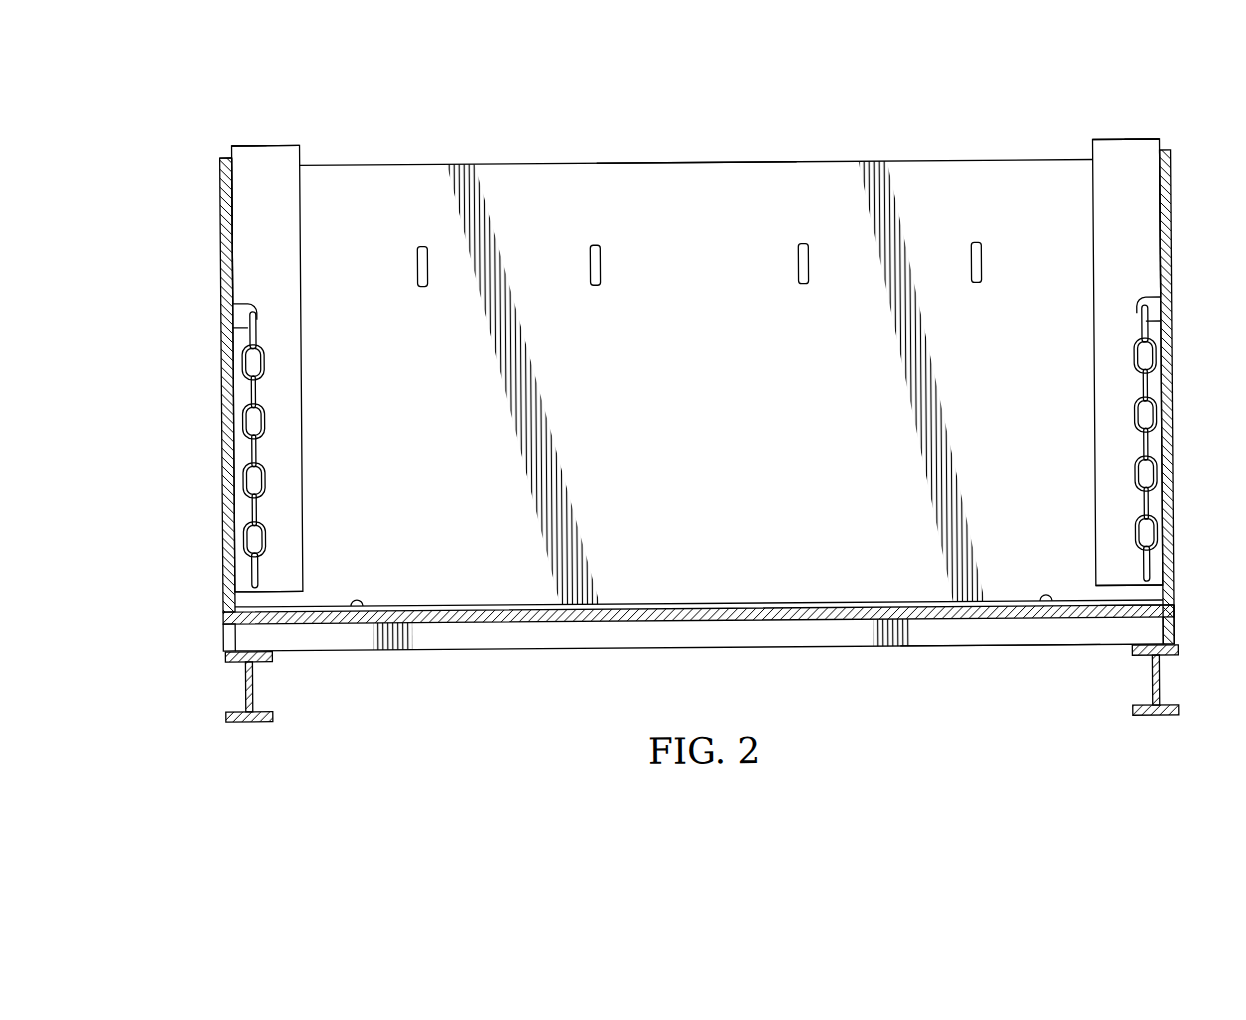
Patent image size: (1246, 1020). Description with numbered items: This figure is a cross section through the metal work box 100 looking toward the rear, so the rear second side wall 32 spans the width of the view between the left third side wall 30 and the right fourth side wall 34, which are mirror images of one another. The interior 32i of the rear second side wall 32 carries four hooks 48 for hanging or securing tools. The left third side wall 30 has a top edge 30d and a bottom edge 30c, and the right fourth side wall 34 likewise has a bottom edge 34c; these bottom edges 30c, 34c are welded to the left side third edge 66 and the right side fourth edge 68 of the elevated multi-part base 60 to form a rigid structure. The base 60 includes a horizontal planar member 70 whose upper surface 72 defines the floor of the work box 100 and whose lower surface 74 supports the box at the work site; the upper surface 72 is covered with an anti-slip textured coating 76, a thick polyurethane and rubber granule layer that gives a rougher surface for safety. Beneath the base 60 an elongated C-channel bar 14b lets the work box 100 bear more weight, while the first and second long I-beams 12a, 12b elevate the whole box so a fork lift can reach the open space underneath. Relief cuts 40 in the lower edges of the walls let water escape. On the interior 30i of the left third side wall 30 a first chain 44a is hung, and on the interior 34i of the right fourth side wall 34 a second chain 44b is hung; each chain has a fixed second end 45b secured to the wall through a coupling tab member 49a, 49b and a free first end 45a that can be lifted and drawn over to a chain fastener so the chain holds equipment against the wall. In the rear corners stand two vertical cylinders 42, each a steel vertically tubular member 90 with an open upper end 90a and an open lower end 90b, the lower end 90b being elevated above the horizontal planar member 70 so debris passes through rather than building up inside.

The work box 100 is at (948, 135).
The first long I-beam 12a is at (252, 723).
The second long I-beam 12b is at (1163, 723).
The second elongated C-channel bar 14b is at (980, 652).
The left third side wall 30 is at (223, 400).
The top edge of left third side wall 30d is at (229, 157).
The interior of left third side wall 30i is at (236, 242).
The bottom edge of left third side wall 30c is at (237, 630).
The rear second side wall 32 is at (706, 166).
The interior of rear second side wall 32i is at (677, 375).
The right fourth side wall 34 is at (1175, 319).
The interior of right fourth side wall 34i is at (1163, 210).
The bottom edge of right fourth side wall 34c is at (1170, 630).
The relief cut 40 is at (360, 600).
The vertical cylinder 42 is at (255, 165).
The first chain 44a is at (268, 420).
The second chain 44b is at (1135, 420).
The free first end of chain 45a is at (258, 583).
The fixed second end of chain 45b is at (262, 316).
The hook 48 is at (428, 284).
The first coupling tab member 49a is at (245, 303).
The second coupling tab member 49b is at (1152, 307).
The elevated multi-part base 60 is at (843, 626).
The left side third edge of base 66 is at (225, 618).
The right side fourth edge of base 68 is at (1175, 618).
The horizontal planar member 70 is at (843, 612).
The upper surface of horizontal planar member 72 is at (662, 607).
The lower surface of horizontal planar member 74 is at (555, 625).
The anti-slip textured coating 76 is at (455, 607).
The vertically tubular member 90 is at (283, 234).
The open upper end of tubular member 90a is at (276, 146).
The open lower end of tubular member 90b is at (287, 595).